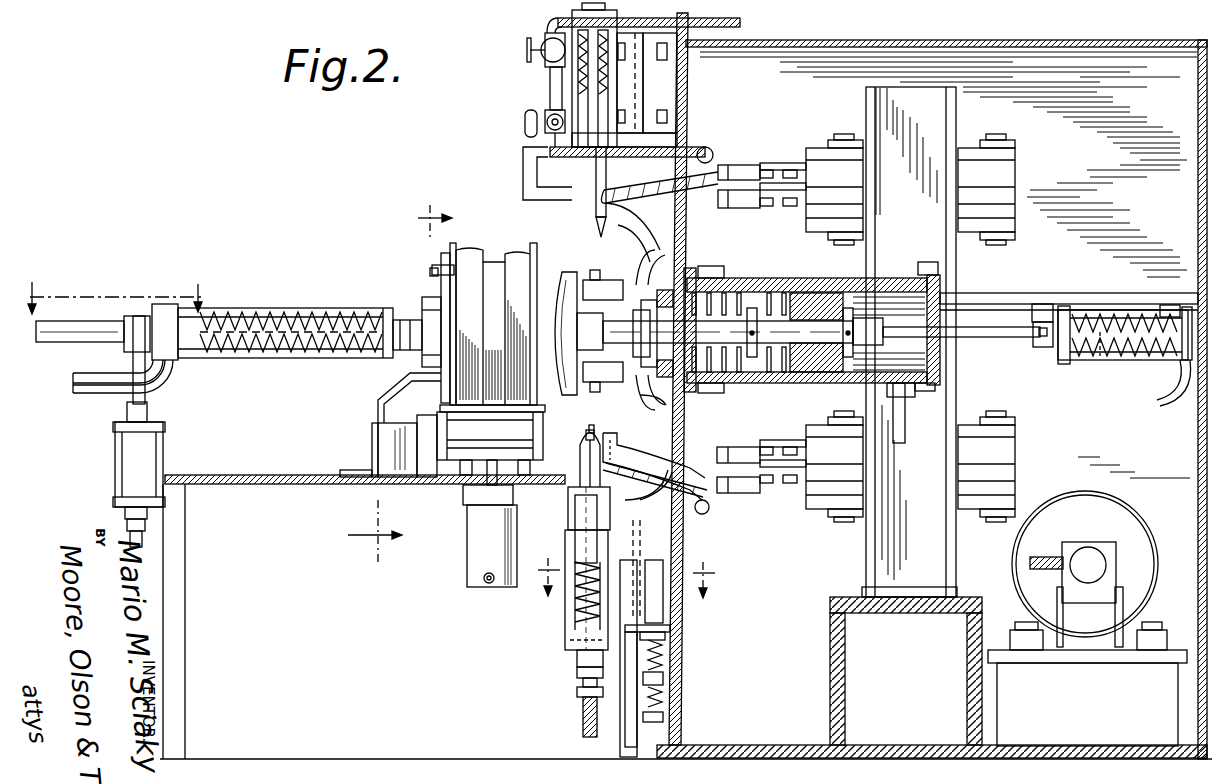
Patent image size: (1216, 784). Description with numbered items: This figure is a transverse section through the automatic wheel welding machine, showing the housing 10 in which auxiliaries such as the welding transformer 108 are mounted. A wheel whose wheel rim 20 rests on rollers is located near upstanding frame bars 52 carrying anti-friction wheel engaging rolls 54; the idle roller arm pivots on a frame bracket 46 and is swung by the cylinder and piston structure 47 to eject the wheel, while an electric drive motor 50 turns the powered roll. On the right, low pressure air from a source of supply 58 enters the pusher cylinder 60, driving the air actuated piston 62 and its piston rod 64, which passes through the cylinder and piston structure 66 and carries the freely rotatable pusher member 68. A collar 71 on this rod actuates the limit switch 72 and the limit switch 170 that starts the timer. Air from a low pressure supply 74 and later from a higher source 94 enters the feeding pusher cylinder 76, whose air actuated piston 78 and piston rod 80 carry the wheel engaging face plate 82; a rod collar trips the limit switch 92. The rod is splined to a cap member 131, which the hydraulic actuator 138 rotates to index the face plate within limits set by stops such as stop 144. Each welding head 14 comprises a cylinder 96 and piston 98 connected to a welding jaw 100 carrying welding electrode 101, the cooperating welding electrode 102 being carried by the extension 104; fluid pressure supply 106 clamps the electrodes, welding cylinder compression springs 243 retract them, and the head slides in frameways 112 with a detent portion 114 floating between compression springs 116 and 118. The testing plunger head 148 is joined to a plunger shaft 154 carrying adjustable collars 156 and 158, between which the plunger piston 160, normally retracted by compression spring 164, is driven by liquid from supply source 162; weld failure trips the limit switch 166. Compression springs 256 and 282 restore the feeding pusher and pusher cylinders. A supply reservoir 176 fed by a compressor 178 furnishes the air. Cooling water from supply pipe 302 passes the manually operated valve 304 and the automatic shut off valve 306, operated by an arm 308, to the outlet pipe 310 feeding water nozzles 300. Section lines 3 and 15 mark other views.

The section line 3- 3 is at (387, 385).
The housing 10 is at (688, 92).
The welding heads 14 is at (64, 266).
The section line 15- 15 is at (712, 515).
The wheel rim 20 is at (470, 258).
The frame bracket 46 is at (440, 478).
The cylinder and piston structure 47 is at (468, 560).
The electric drive motor 50 is at (392, 444).
The upstanding frame bars 52 is at (465, 309).
The anti-friction wheel engaging rolls 54 is at (430, 272).
The low pressure source of supply 58 is at (1157, 404).
The pusher cylinder 60 is at (1075, 364).
The air actuated piston 62 is at (1140, 362).
The piston rod 64 is at (990, 340).
The cylinder and piston structure 66 is at (772, 292).
The pusher member 68 is at (556, 300).
The collar 71 is at (1040, 350).
The limit switch 72 is at (952, 305).
The low pressure supply 74 is at (73, 378).
The feeding pusher cylinder 76 is at (232, 306).
The air actuated piston 78 is at (232, 360).
The piston rod 80 is at (296, 358).
The wheel engaging face plate 82 is at (422, 360).
The limit switch 92 is at (397, 320).
The higher source of compressed air supply 94 is at (80, 390).
The cylinder 96 is at (566, 600).
The piston 98 is at (562, 646).
The welding jaw 100 is at (580, 470).
The welding electrode 101 is at (606, 444).
The welding electrode 102 is at (592, 426).
The extension 104 is at (655, 414).
The fluid pressure supply 106 is at (585, 723).
The welding transformer 108 is at (1015, 186).
The frameways 112 is at (664, 600).
The detent portion 114 is at (634, 692).
The compression spring 116 is at (666, 660).
The compression spring 118 is at (666, 700).
The cap member 131 is at (92, 320).
The hydraulic actuator 138 is at (113, 452).
The stop 144 is at (140, 314).
The testing plunger head 148 is at (581, 455).
The plunger shaft 154 is at (752, 380).
The adjustable collar 156 is at (876, 300).
The adjustable collar 158 is at (735, 280).
The plunger piston 160 is at (800, 385).
The supply source 162 is at (900, 445).
The compression spring 164 is at (702, 290).
The limit switch 166 is at (697, 268).
The limit switch 170 is at (1038, 300).
The supply reservoir 176 is at (1140, 540).
The compressor 178 is at (1075, 548).
The welding cylinder compression springs 243 is at (576, 642).
The compression spring 256 is at (294, 308).
The compression spring 282 is at (1098, 358).
The water nozzles 300 is at (598, 236).
The supply pipe 302 is at (742, 21).
The manually operated valve 304 is at (527, 54).
The automatic shut off valve 306 is at (525, 121).
The arm 308 is at (523, 160).
The outlet pipe 310 is at (708, 150).